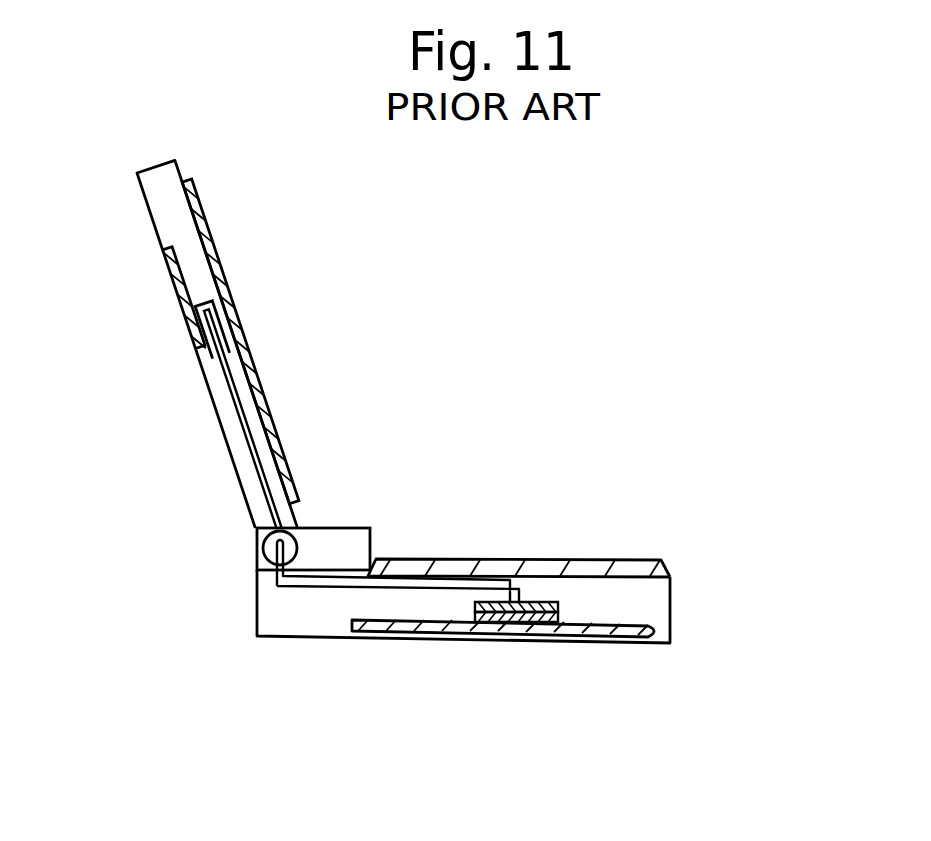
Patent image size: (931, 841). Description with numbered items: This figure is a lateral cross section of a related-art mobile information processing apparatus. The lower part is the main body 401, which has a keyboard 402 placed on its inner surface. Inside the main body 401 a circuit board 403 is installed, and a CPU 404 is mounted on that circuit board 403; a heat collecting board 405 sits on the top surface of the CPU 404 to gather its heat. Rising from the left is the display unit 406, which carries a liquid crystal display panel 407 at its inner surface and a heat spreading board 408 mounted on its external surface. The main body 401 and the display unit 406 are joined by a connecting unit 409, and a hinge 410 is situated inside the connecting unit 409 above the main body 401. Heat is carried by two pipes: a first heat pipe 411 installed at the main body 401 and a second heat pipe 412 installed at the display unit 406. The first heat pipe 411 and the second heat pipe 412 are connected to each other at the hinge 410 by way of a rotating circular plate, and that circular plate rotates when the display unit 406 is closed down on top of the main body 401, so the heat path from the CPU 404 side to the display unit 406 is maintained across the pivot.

The main body 401 is at (668, 595).
The keyboard 402 is at (488, 578).
The circuit board 403 is at (607, 622).
The CPU 404 is at (553, 600).
The heat collecting board 405 is at (522, 600).
The display unit 406 is at (157, 203).
The liquid crystal display panel 407 is at (260, 393).
The heat spreading board 408 is at (173, 284).
The connecting unit 409 is at (362, 527).
The hinge 410 is at (262, 546).
The first heat pipe 411 is at (335, 588).
The second heat pipe 412 is at (226, 327).